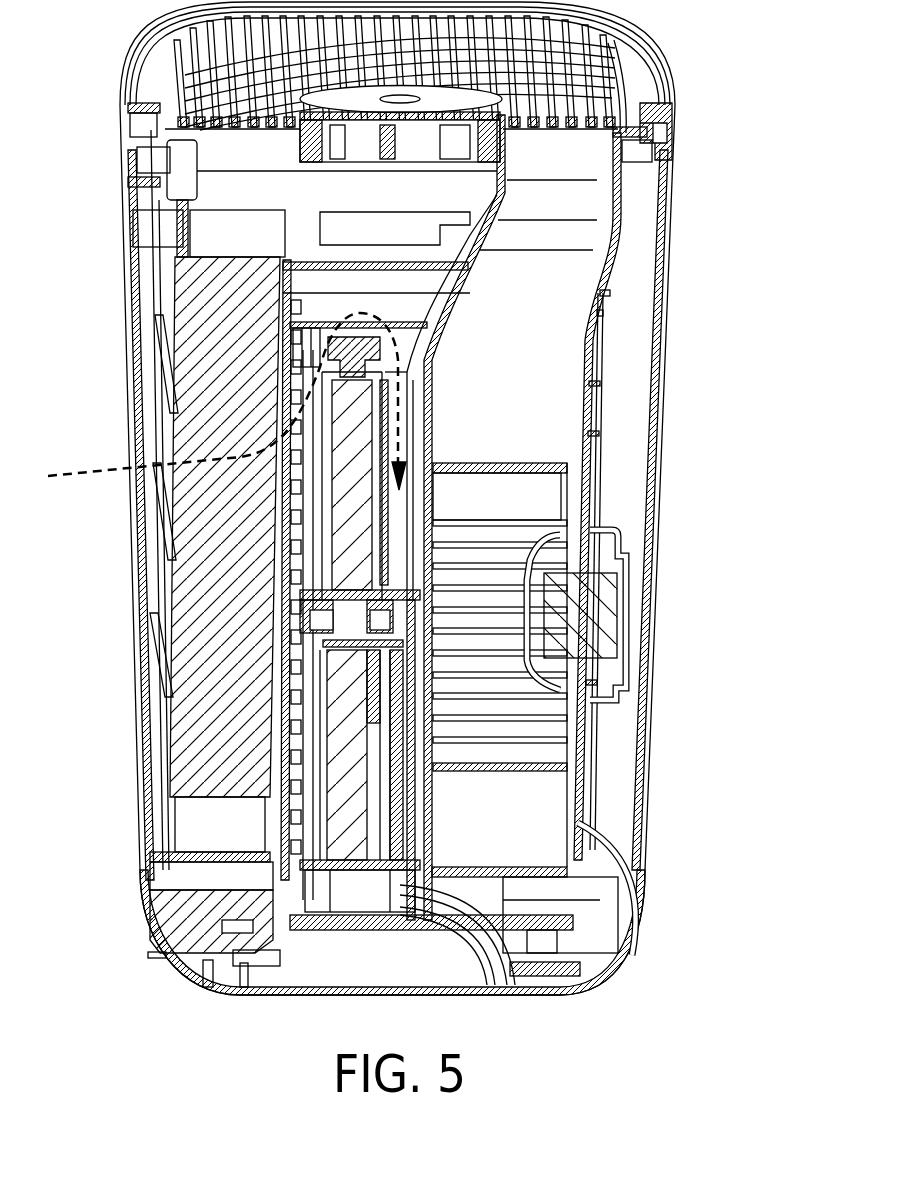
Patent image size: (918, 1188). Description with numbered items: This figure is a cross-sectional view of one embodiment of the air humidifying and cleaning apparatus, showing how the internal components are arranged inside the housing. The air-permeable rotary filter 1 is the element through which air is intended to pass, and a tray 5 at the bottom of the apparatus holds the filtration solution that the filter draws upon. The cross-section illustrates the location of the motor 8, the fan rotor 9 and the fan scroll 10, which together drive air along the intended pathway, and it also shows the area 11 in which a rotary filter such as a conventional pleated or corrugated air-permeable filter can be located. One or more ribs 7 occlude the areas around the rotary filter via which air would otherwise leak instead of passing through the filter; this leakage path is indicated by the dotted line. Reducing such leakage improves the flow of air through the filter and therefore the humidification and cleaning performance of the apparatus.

The air-permeable rotary filter 1 is at (347, 693).
The tray 5 is at (518, 930).
The rib 7 is at (282, 357).
The motor 8 is at (603, 613).
The fan rotor 9 is at (552, 490).
The fan scroll 10 is at (577, 233).
The area for rotary filter 11 is at (183, 743).